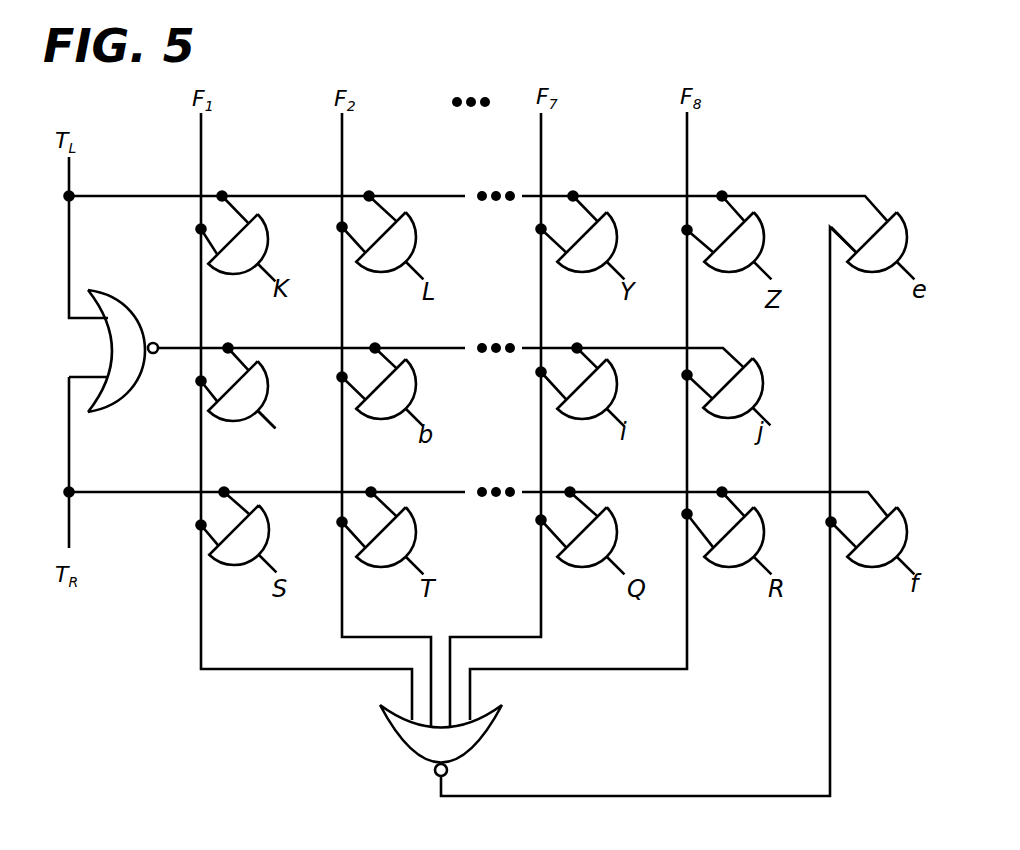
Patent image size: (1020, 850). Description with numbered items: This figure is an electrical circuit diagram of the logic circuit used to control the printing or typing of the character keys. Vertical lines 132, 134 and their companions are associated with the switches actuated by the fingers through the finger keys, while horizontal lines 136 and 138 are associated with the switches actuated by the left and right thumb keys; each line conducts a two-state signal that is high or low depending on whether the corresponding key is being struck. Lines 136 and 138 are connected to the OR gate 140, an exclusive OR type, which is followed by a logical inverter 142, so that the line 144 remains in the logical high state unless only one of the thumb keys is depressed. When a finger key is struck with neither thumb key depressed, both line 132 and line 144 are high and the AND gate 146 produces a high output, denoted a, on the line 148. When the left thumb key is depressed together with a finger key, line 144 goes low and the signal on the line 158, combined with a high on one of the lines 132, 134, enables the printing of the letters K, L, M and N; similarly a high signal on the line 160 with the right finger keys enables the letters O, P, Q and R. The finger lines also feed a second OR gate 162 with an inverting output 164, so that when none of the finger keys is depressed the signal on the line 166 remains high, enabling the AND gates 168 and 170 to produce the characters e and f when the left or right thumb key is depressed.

The line 132 is at (201, 147).
The line 134 is at (342, 150).
The line 136 is at (69, 182).
The line 138 is at (69, 518).
The OR gate 140 is at (105, 286).
The logical inverter 142 is at (186, 310).
The line 144 is at (187, 353).
The AND gate 146 is at (267, 383).
The line 148 is at (262, 420).
The line 158 is at (260, 160).
The line 160 is at (338, 500).
The OR gate 162 is at (505, 710).
The logical inverter 164 is at (447, 770).
The line 166 is at (593, 796).
The AND gate 168 is at (863, 268).
The AND gate 170 is at (863, 565).